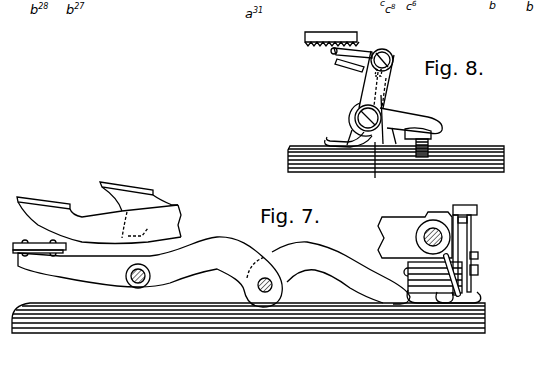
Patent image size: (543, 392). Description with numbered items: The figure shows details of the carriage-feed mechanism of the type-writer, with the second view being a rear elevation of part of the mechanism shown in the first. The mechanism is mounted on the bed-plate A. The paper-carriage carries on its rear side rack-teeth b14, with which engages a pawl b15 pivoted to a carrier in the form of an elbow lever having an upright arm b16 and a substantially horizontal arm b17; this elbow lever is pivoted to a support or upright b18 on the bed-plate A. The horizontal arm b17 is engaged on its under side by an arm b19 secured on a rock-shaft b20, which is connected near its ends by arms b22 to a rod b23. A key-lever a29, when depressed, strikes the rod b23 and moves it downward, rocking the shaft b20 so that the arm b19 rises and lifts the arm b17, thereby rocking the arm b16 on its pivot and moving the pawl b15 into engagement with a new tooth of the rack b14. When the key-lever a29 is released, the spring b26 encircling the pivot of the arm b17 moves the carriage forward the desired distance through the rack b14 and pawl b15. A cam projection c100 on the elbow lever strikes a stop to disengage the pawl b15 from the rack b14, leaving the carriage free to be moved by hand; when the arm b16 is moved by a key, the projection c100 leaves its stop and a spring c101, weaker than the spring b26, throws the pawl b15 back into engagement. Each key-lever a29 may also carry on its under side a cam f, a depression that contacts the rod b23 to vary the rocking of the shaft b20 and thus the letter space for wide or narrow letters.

In FIG. 7, the bed-plate A is at (486, 327).
In FIG. 8, the bed-plate A is at (499, 146).
In FIG. 8, the rack-teeth b14 is at (330, 31).
In FIG. 8, the cam projection c100 is at (389, 51).
In FIG. 7, the upright arm b16 is at (471, 237).
In FIG. 8, the upright arm b16 is at (387, 89).
In FIG. 8, the horizontal arm b17 is at (386, 108).
In FIG. 7, the arm b19 is at (337, 252).
In FIG. 8, the arm b19 is at (431, 138).
In FIG. 7, the spring b26 is at (480, 301).
In FIG. 8, the spring b26 is at (327, 137).
In FIG. 7, the pawl b15 is at (452, 209).
In FIG. 8, the pawl b15 is at (333, 53).
In FIG. 8, the spring c101 is at (352, 70).
In FIG. 8, the support or upright b18 is at (382, 168).
In FIG. 7, the key-lever a29 is at (175, 205).
In FIG. 7, the cam f is at (136, 225).
In FIG. 7, the arm b22 is at (215, 237).
In FIG. 7, the rod b23 is at (132, 283).
In FIG. 7, the rock-shaft b20 is at (273, 286).